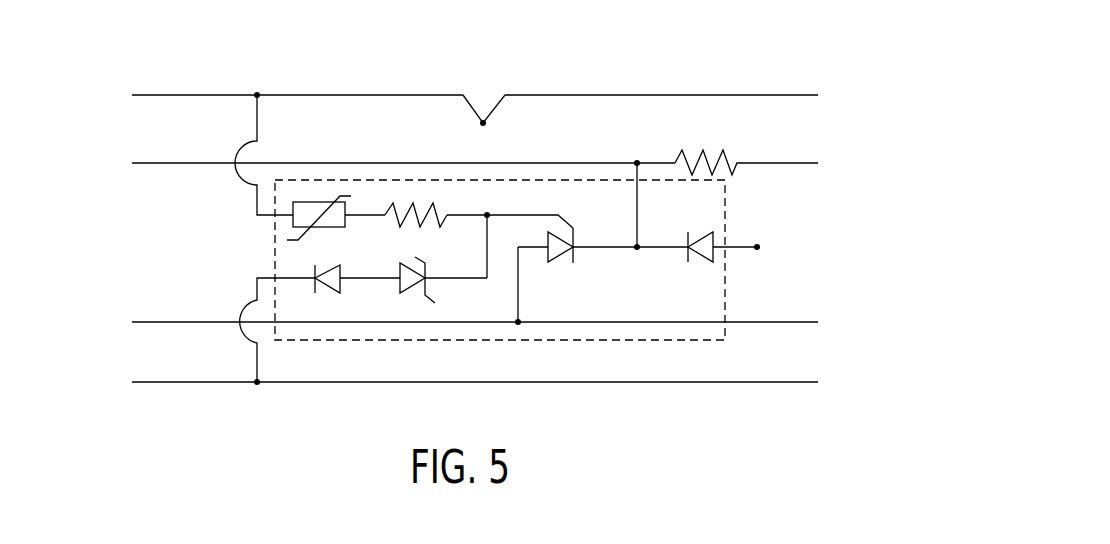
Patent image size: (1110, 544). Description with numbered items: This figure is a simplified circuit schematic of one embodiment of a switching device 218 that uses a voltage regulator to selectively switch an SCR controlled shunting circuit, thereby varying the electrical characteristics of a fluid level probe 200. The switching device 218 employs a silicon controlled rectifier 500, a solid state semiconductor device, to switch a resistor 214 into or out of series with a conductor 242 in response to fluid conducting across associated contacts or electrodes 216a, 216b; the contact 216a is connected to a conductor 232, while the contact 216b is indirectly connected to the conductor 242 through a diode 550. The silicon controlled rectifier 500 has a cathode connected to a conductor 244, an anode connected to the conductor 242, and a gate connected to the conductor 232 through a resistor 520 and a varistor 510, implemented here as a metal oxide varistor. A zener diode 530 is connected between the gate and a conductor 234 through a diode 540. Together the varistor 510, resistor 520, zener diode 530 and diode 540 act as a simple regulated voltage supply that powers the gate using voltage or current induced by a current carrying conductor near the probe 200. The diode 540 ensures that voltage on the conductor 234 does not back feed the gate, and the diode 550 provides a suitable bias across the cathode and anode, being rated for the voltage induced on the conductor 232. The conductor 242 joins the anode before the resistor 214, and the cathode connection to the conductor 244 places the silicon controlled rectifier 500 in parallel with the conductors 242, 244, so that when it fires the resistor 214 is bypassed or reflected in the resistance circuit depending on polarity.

The probe 200 is at (788, 62).
The conductor 232 is at (395, 95).
The contact 216a is at (493, 123).
The resistor 214 is at (733, 153).
The contact 216b is at (762, 232).
The conductor 242 is at (178, 165).
The conductor 244 is at (186, 322).
The conductor 234 is at (693, 383).
The switching device 218 is at (350, 341).
The varistor 510 is at (312, 200).
The resistor 520 is at (390, 210).
The silicon controlled rectifier 500 is at (553, 262).
The diode 550 is at (702, 255).
The diode 540 is at (323, 266).
The zener diode 530 is at (405, 293).